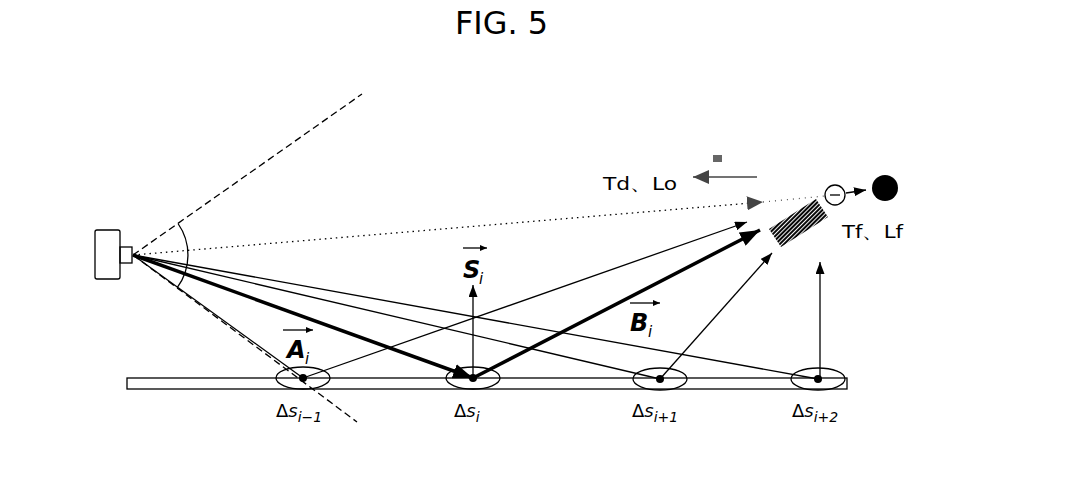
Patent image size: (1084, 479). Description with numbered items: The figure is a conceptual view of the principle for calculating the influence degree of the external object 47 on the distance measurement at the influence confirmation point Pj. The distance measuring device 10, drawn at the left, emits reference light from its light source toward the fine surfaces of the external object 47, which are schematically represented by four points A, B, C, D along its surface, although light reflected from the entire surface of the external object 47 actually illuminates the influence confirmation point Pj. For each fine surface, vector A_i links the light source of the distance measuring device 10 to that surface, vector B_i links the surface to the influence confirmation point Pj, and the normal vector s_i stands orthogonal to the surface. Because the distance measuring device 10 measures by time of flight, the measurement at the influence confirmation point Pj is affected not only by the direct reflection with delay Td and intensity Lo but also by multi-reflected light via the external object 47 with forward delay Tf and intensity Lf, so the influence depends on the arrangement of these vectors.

The distance measuring device 10 is at (105, 239).
The external object 47 is at (163, 377).
The point A is at (303, 415).
The point B is at (473, 415).
The point C is at (660, 416).
The point D is at (818, 416).
The influence confirmation point Pj is at (847, 175).